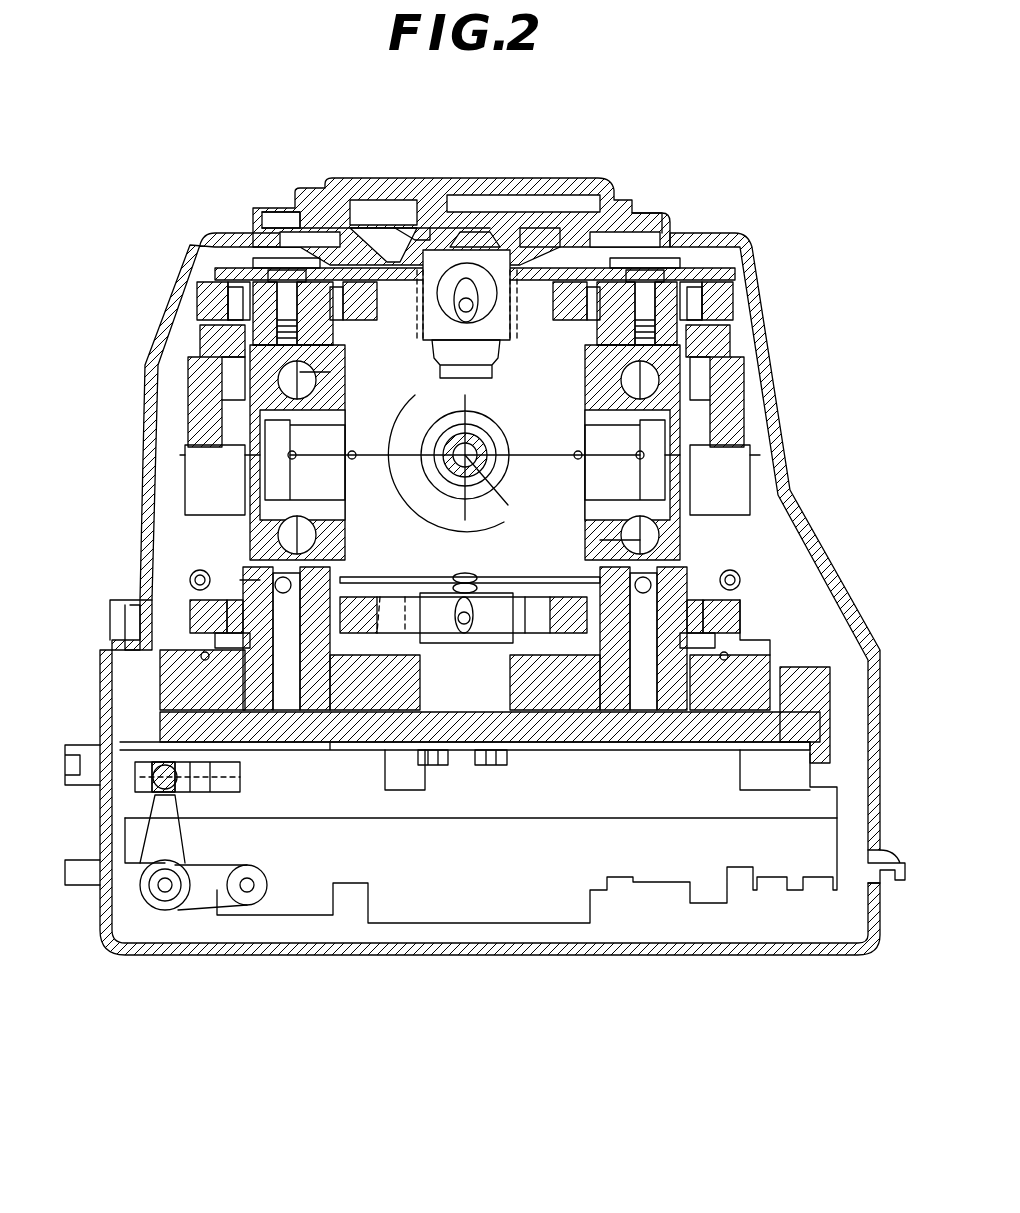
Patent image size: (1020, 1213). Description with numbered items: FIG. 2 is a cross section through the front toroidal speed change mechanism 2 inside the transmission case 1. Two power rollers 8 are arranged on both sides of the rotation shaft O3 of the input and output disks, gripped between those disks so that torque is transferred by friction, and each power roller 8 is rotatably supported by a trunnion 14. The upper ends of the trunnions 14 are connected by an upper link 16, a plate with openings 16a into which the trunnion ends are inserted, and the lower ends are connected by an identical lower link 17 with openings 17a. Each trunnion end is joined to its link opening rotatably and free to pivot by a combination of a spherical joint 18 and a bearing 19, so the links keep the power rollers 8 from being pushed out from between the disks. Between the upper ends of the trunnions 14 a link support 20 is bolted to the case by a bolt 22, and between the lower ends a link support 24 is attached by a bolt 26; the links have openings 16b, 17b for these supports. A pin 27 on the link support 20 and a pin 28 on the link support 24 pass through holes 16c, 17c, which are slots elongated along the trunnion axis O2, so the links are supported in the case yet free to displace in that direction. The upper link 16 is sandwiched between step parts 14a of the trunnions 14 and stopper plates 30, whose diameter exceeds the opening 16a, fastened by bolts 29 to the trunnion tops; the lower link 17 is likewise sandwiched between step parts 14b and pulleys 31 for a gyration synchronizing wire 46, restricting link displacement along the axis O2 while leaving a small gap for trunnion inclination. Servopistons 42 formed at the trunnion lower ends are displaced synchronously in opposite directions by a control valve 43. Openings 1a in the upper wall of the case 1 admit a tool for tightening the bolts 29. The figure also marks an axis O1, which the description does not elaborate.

The transmission case 1 is at (180, 330).
The openings 1a is at (288, 205).
The front toroidal speed change mechanism 2 is at (592, 262).
The power roller 8 is at (335, 368).
The trunnion 14 is at (190, 422).
The step part 14a is at (245, 328).
The step part 14b is at (200, 520).
The upper link 16 is at (250, 278).
The openings 16a is at (238, 296).
The openings 16b is at (420, 215).
The holes 16c is at (470, 300).
The lower link 17 is at (150, 650).
The openings 17a is at (190, 578).
The openings 17b is at (385, 598).
The holes 17c is at (450, 598).
The spherical joint 18 is at (226, 306).
The bearing 19 is at (236, 296).
The link support 20 is at (505, 332).
The bolt 22 is at (498, 366).
The link support 24 is at (432, 767).
The bolt 26 is at (492, 767).
The pin 27 is at (536, 225).
The pin 28 is at (480, 600).
The bolt 29 is at (283, 262).
The stopper plate 30 is at (335, 282).
The pulley 31 is at (160, 725).
The servopiston 42 is at (240, 720).
The control valve 43 is at (465, 895).
The gyration synchronizing wire 46 is at (740, 648).
The main axis O1 is at (465, 455).
The trunnion axis O2 is at (330, 372).
The rotation shaft of the input/output disks O3 is at (506, 505).